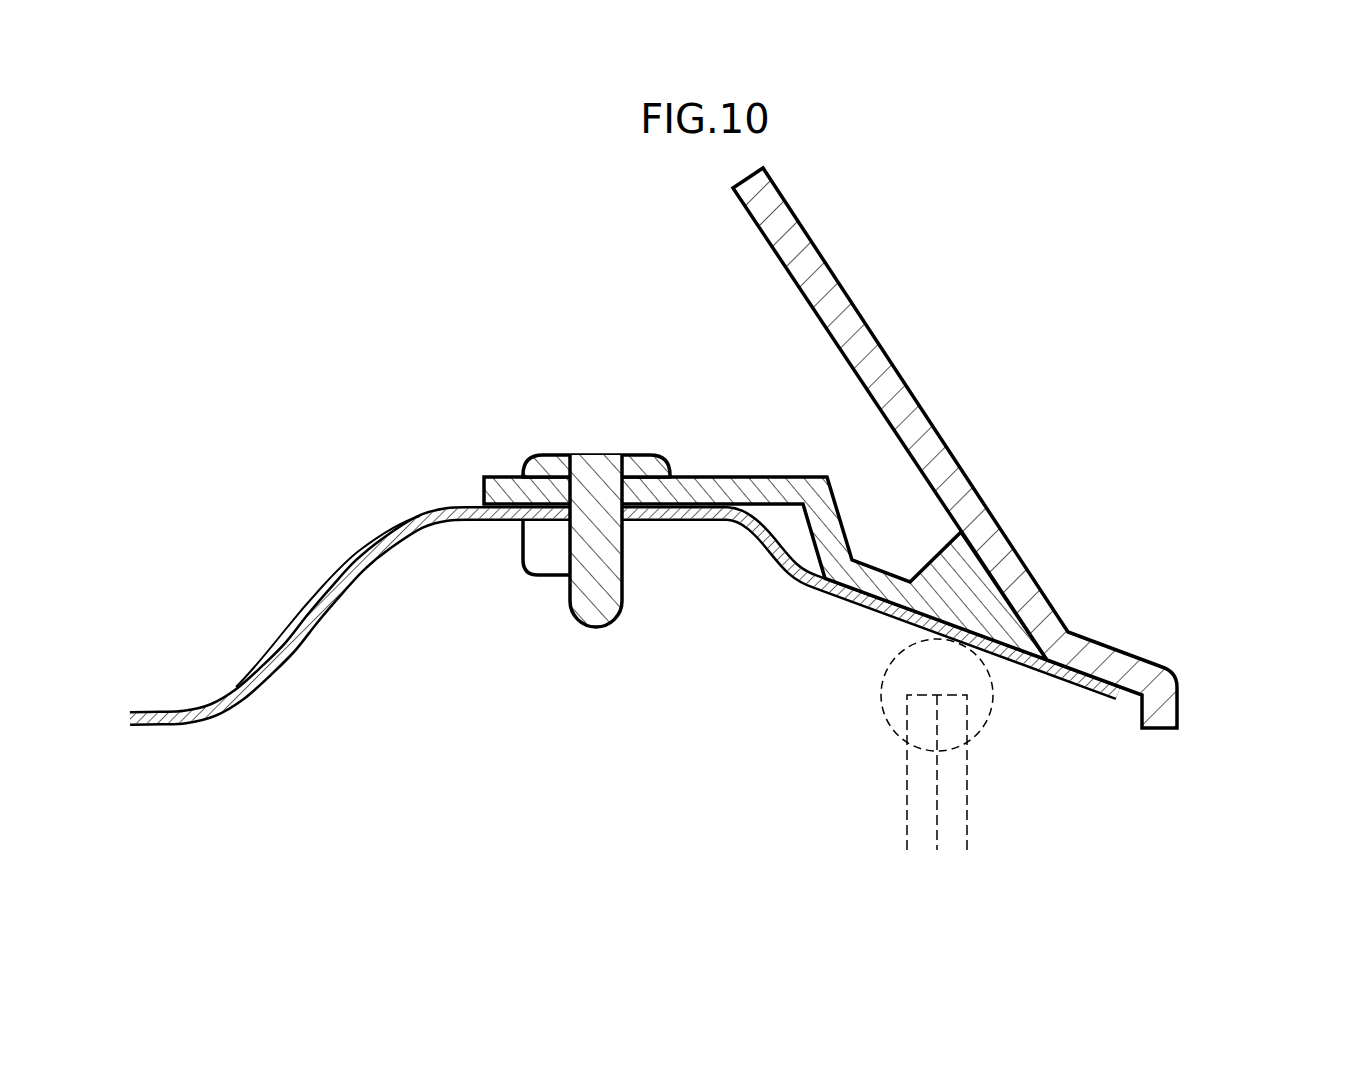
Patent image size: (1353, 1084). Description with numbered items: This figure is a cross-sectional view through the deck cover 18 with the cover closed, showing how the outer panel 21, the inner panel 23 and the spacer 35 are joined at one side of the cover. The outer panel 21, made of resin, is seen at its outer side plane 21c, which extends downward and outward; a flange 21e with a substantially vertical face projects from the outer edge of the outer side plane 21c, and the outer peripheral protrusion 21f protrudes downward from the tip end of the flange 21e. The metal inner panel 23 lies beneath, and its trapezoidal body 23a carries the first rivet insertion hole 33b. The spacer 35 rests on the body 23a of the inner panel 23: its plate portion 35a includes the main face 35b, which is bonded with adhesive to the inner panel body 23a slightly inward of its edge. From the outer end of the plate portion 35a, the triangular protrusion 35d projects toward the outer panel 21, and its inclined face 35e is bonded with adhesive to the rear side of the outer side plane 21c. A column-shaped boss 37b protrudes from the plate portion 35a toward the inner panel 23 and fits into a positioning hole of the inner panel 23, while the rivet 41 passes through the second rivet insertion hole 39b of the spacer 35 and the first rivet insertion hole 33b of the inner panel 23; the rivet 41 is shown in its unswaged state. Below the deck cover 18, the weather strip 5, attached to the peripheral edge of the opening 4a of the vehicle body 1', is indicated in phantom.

The deck cover 18 is at (1104, 343).
The outer panel 21 is at (953, 450).
The outer side plane 21c is at (977, 492).
The flange 21e is at (1127, 647).
The outer peripheral protrusion 21f is at (1177, 688).
The inner panel 23 is at (297, 657).
The body 23a is at (355, 578).
The first rivet insertion hole 33b is at (575, 557).
The spacer 35 is at (689, 476).
The plate portion 35a is at (796, 476).
The main face 35b is at (748, 476).
The triangular protrusion 35d is at (990, 603).
The inclined face 35e is at (980, 536).
The boss 37b is at (533, 548).
The second rivet insertion hole 39b is at (617, 497).
The rivet 41 is at (597, 452).
The weather strip 5 is at (992, 700).
The opening 4a is at (907, 815).
The vehicle body 1' is at (973, 801).